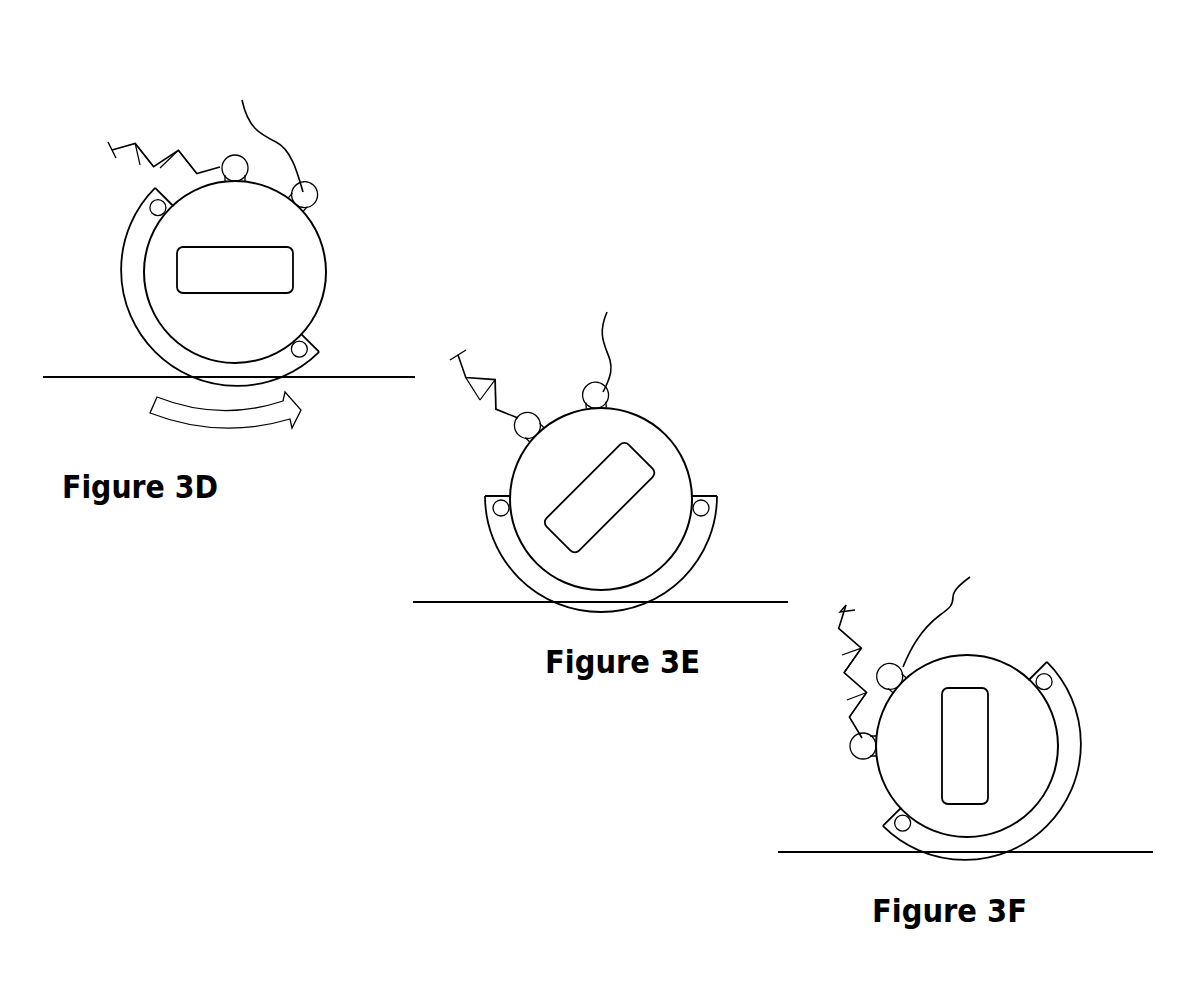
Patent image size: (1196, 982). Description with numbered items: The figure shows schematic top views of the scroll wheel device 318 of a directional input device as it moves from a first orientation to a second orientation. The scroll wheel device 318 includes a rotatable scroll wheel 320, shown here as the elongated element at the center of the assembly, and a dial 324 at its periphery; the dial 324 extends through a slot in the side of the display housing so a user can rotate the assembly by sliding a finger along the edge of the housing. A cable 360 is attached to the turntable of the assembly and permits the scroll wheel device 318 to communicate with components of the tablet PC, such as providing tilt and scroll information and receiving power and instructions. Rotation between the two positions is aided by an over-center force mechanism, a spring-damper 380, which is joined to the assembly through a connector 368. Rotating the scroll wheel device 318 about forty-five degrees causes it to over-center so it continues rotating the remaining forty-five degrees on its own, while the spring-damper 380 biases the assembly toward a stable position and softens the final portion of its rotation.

In FIG. 3D, the scroll wheel device 318 is at (365, 207).
In FIG. 3E, the scroll wheel device 318 is at (683, 403).
In FIG. 3F, the scroll wheel device 318 is at (1002, 608).
In FIG. 3D, the rotatable scroll wheel 320 is at (210, 265).
In FIG. 3E, the rotatable scroll wheel 320 is at (582, 498).
In FIG. 3F, the rotatable scroll wheel 320 is at (957, 745).
In FIG. 3D, the dial 324 is at (150, 332).
In FIG. 3E, the dial 324 is at (537, 577).
In FIG. 3F, the dial 324 is at (1062, 762).
In FIG. 3D, the cable 360 is at (295, 157).
In FIG. 3E, the cable 360 is at (610, 358).
In FIG. 3F, the cable 360 is at (953, 597).
In FIG. 3D, the connector 368 is at (115, 157).
In FIG. 3E, the connector 368 is at (458, 357).
In FIG. 3F, the connector 368 is at (843, 603).
In FIG. 3D, the spring-damper 380 is at (150, 160).
In FIG. 3E, the spring-damper 380 is at (488, 407).
In FIG. 3F, the spring-damper 380 is at (852, 660).